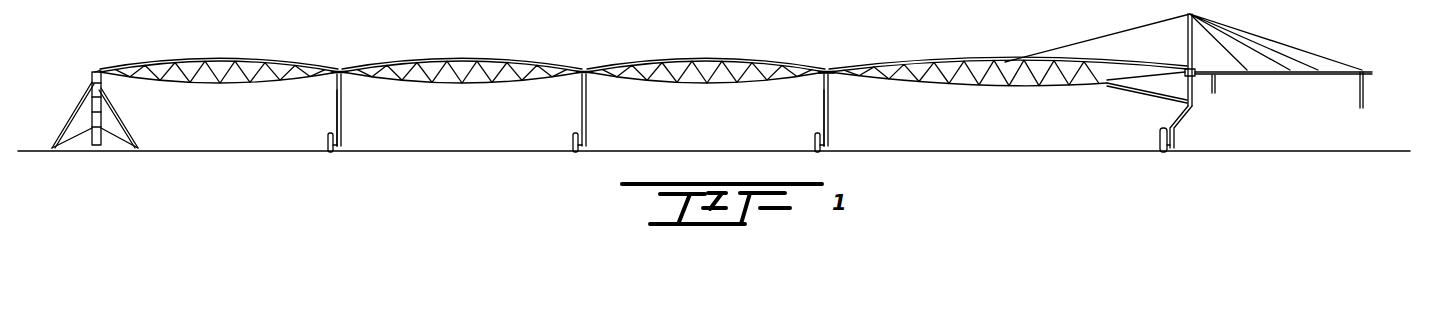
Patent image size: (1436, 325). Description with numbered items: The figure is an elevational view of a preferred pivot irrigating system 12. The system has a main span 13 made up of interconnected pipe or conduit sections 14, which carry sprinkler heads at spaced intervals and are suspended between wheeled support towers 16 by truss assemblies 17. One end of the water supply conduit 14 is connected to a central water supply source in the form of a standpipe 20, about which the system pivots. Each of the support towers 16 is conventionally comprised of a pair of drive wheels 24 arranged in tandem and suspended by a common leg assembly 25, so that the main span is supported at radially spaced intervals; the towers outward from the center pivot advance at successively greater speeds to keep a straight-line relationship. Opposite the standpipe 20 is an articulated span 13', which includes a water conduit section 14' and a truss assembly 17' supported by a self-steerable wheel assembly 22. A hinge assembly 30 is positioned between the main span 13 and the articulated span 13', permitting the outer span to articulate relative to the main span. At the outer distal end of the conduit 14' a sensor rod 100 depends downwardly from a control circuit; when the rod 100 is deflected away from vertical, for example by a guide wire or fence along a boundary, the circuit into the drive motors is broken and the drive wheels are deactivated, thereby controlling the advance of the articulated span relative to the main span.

The pivot irrigating system 12 is at (344, 47).
The main span 13 is at (462, 49).
The articulated span 13' is at (971, 49).
The pipe or conduit sections 14 is at (462, 42).
The water conduit section 14' is at (1008, 42).
The wheeled support towers 16 is at (351, 106).
The truss assemblies 17 is at (462, 93).
The truss assembly 17' is at (1008, 99).
The standpipe 20 is at (90, 73).
The self-steerable wheel assembly 22 is at (1201, 115).
The drive wheels 24 is at (329, 141).
The leg assembly 25 is at (336, 96).
The hinge assembly 30 is at (824, 57).
The sensor rod 100 is at (1364, 103).